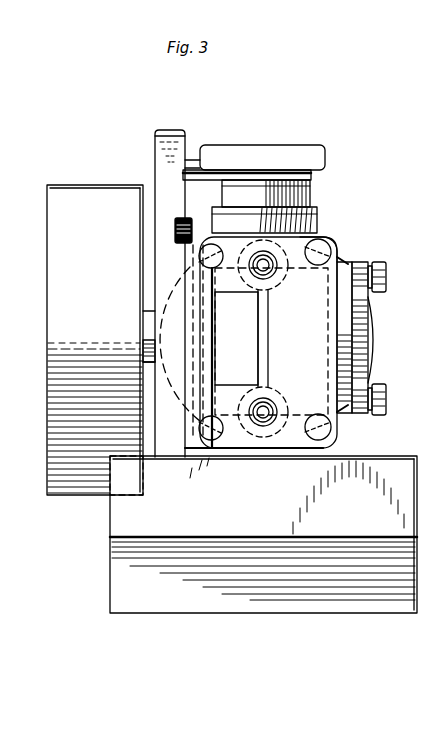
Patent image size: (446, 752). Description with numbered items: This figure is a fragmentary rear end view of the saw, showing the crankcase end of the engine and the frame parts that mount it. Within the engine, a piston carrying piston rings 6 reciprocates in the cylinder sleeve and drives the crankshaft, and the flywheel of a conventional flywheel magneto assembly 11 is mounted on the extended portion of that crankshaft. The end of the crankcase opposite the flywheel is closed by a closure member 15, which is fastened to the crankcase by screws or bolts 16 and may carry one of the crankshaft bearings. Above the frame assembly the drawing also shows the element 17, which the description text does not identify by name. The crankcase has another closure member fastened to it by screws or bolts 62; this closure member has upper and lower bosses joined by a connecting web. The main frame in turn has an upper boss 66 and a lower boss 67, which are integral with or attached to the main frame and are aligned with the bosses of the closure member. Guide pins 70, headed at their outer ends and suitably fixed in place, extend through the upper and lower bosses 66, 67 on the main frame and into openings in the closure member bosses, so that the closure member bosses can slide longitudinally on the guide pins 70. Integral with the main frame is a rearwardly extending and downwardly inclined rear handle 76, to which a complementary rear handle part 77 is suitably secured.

The piston rings 6 is at (410, 473).
The flywheel magneto assembly 11 is at (46, 380).
The closure member 15 is at (372, 362).
The screws or bolts 16 is at (387, 280).
The cap 17 is at (262, 160).
The screws or bolts 62 is at (322, 249).
The upper boss 66 is at (311, 237).
The lower boss 67 is at (281, 390).
The guide pins 70 is at (266, 270).
The rear handle 76 is at (157, 247).
The rear handle part 77 is at (193, 263).